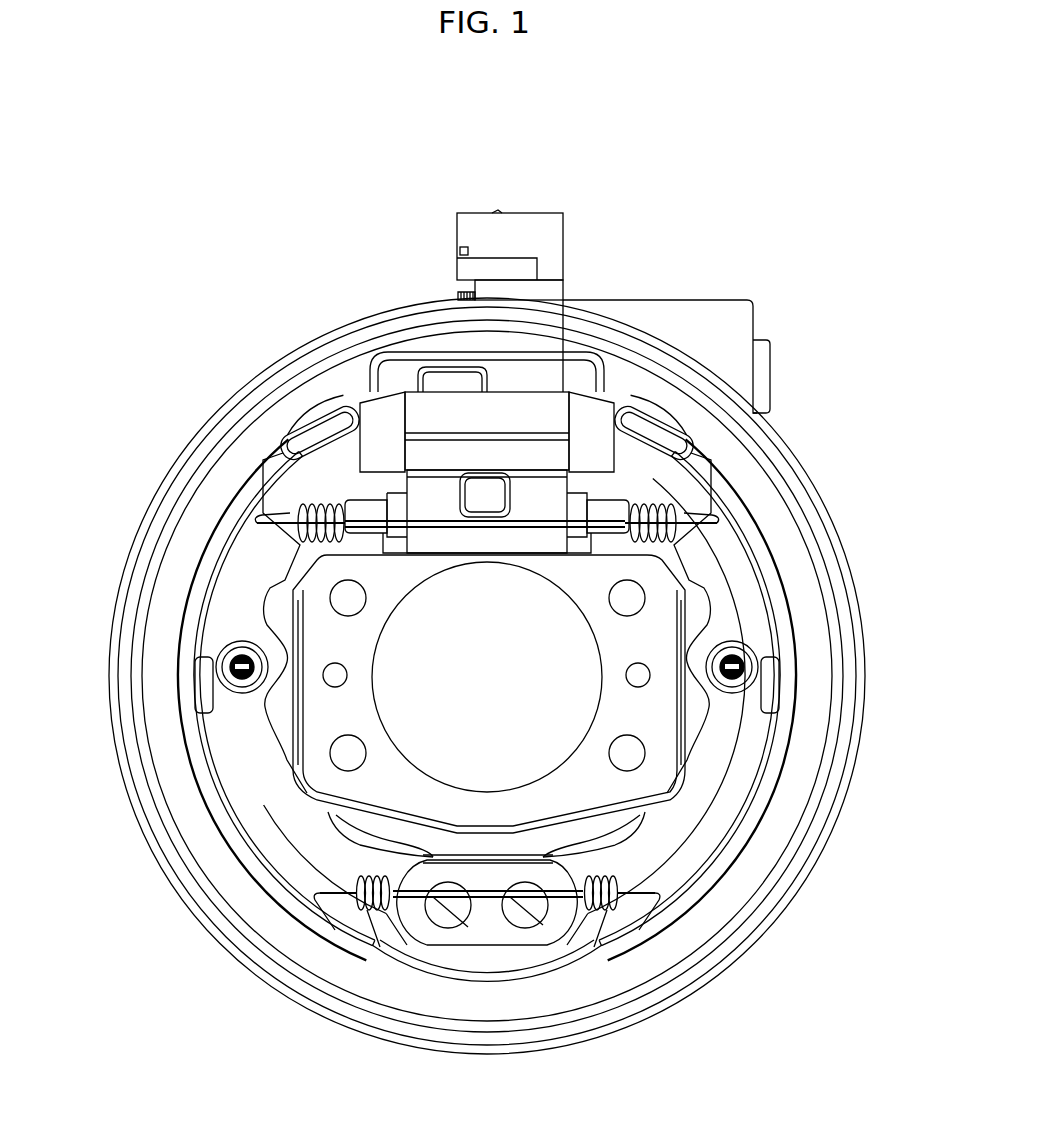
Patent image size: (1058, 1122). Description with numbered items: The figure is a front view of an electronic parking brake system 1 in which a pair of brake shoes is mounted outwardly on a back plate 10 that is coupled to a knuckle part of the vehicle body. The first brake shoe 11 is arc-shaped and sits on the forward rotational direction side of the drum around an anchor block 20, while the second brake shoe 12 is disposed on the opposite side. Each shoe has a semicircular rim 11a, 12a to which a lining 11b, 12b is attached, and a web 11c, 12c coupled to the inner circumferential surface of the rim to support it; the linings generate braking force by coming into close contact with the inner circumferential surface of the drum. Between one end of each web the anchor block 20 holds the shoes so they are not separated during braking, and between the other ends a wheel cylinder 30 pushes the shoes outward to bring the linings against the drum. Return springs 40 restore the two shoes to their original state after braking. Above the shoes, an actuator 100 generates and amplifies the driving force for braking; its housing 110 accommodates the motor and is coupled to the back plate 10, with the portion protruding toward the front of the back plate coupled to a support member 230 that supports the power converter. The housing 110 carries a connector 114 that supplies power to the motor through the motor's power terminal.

The electronic parking brake system 1 is at (183, 172).
The back plate 10 is at (780, 500).
The first brake shoe 11 is at (230, 700).
The rim 11a is at (233, 820).
The lining 11b is at (207, 788).
The web 11c is at (288, 842).
The second brake shoe 12 is at (746, 700).
The rim 12a is at (741, 820).
The lining 12b is at (767, 788).
The web 12c is at (686, 842).
The anchor block 20 is at (487, 932).
The wheel cylinder 30 is at (436, 407).
The return spring 40 is at (307, 510).
The actuator 100 is at (506, 357).
The housing 110 is at (697, 300).
The connector 114 is at (515, 213).
The support member 230 is at (424, 493).